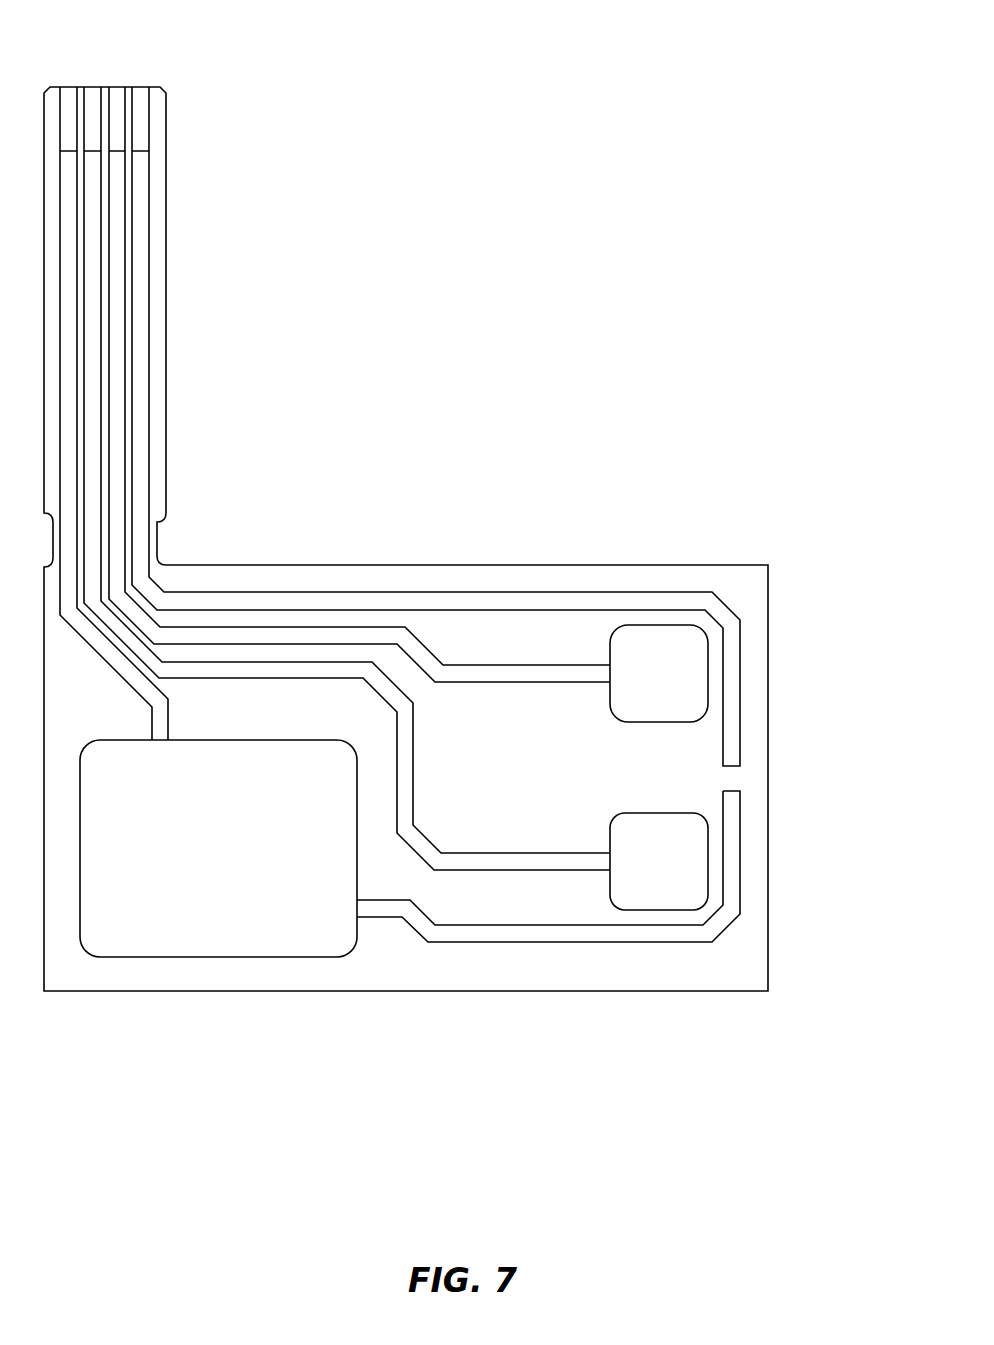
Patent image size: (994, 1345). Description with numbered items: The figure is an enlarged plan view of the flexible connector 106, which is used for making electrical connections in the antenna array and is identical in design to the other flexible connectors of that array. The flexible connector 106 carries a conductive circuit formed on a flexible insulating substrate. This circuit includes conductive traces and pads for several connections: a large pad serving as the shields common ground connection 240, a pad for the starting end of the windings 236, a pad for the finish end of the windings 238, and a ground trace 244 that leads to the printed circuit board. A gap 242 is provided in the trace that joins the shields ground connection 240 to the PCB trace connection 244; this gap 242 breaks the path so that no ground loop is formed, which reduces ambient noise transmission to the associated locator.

The flexible connector 106 is at (478, 535).
The ground trace 244 is at (138, 87).
The starting end of the windings 236 is at (690, 648).
The finish end of the windings 238 is at (688, 835).
The shields common ground connection 240 is at (207, 935).
The gap 242 is at (730, 778).